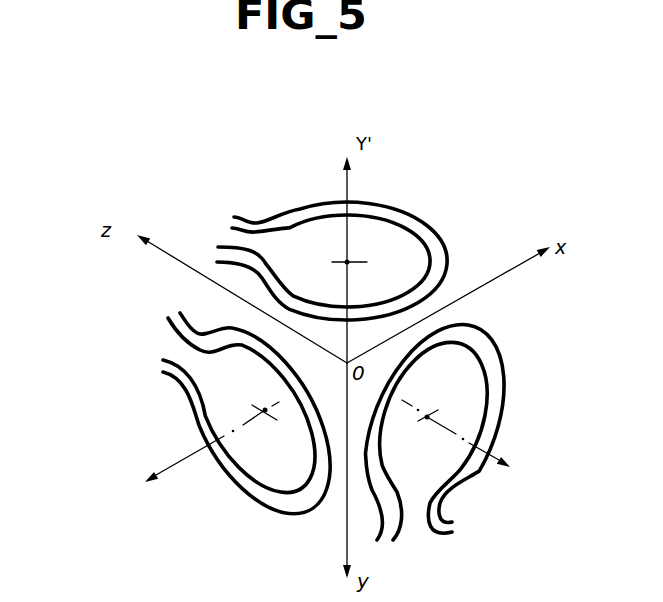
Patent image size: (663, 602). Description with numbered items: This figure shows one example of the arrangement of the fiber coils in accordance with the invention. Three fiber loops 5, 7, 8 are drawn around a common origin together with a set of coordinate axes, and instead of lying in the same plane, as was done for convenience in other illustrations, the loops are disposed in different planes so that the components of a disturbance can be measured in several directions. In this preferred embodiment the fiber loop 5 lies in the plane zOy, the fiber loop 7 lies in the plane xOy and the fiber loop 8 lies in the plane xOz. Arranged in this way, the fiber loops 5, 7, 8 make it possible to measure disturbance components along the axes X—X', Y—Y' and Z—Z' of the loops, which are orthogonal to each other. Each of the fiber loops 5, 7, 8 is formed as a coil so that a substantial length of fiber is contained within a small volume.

The fiber loop 5 is at (240, 487).
The fiber loop 7 is at (500, 387).
The fiber loop 8 is at (432, 247).